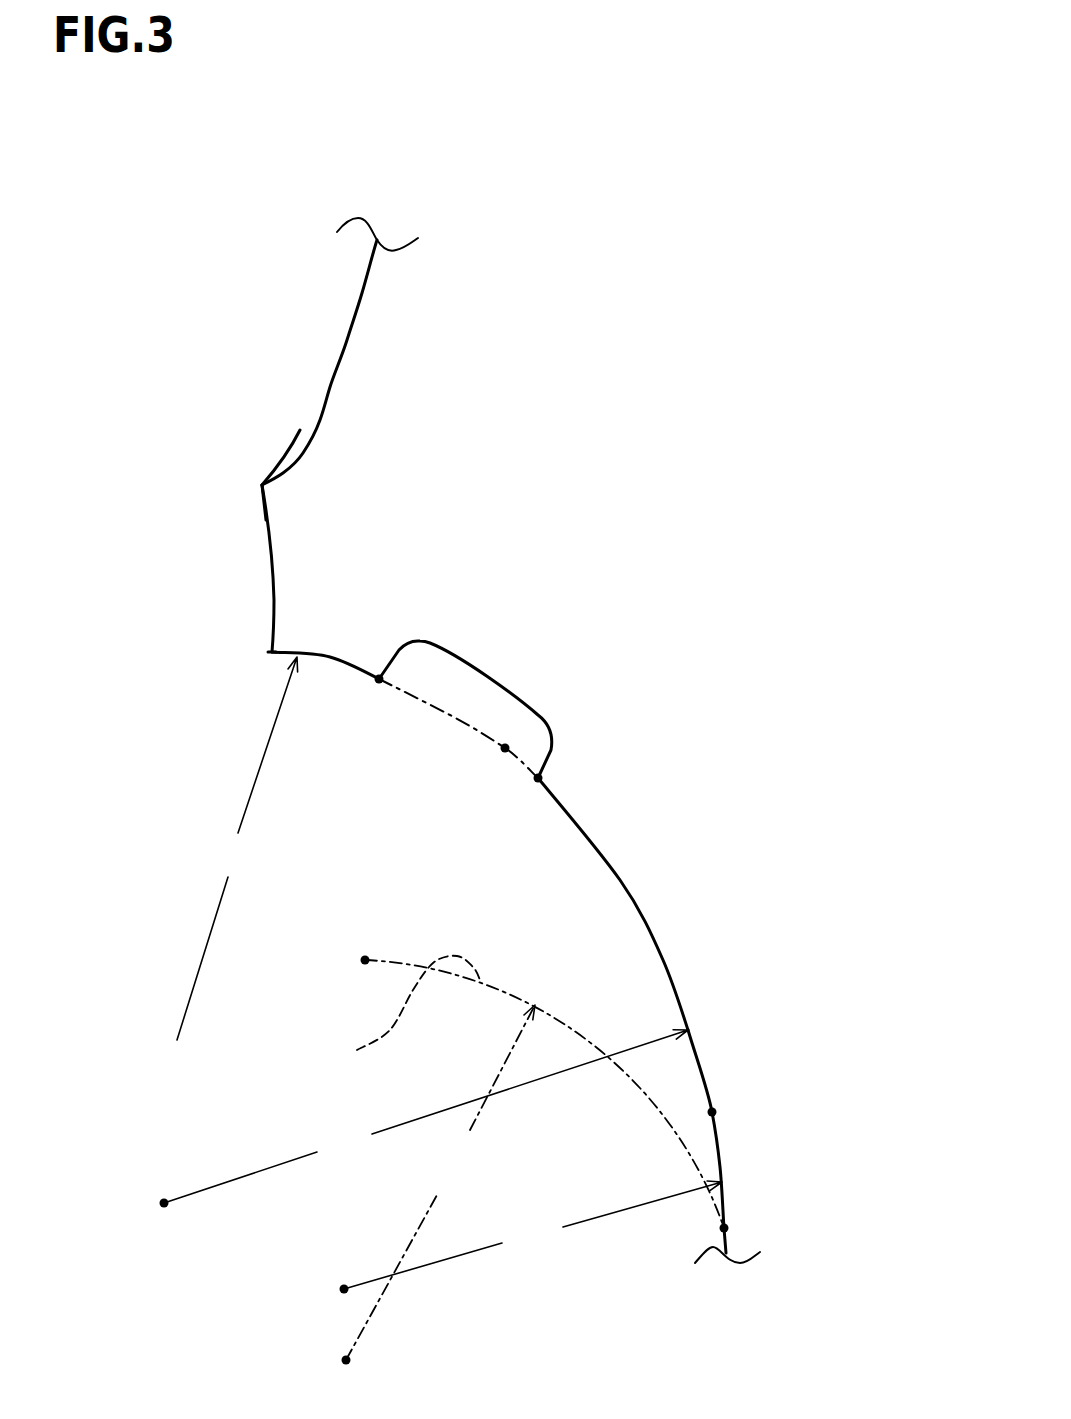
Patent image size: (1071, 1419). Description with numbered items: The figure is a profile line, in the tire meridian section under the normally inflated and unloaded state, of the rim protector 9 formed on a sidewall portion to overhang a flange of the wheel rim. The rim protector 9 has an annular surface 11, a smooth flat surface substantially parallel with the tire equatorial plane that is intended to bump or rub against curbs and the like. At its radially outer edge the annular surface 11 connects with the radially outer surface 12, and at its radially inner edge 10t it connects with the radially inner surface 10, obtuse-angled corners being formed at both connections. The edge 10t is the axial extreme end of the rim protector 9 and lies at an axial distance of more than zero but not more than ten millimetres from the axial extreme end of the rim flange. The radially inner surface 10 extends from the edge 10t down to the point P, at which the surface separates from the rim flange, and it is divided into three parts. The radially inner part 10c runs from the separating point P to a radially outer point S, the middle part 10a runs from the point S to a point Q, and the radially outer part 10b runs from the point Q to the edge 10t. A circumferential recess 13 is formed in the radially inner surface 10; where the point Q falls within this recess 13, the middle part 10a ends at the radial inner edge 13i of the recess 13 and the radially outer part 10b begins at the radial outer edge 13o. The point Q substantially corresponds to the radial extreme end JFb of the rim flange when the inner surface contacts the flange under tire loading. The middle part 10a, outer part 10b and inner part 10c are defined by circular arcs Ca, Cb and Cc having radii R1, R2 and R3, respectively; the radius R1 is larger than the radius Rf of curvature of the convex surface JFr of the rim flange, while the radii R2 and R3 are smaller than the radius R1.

The rim protector 9 is at (236, 489).
The annular surface 11 is at (261, 553).
The radially outer surface 12 is at (291, 405).
The radially inner surface 10 is at (599, 896).
The radially inner edge of the annular surface 10t is at (272, 650).
The middle part 10a is at (698, 876).
The radially outer part 10b is at (566, 615).
The radially inner part 10c is at (773, 1061).
The circular arc Ca is at (660, 960).
The circular arc Cb is at (325, 663).
The circular arc Cc is at (773, 1061).
The recess 13 is at (471, 684).
The radial outer edge of the recess 13o is at (379, 682).
The radial inner edge of the recess 13i is at (538, 778).
The point Q is at (505, 748).
The radius R1 is at (424, 1119).
The radius R2 is at (237, 848).
The radius R3 is at (531, 1237).
The radius of curvature of the convex surface Rf is at (439, 1185).
The radial extreme end of the rim flange JFb is at (512, 1086).
The convex surface of the rim flange JFr is at (391, 1012).
The point S is at (712, 1112).
The point P is at (724, 1228).